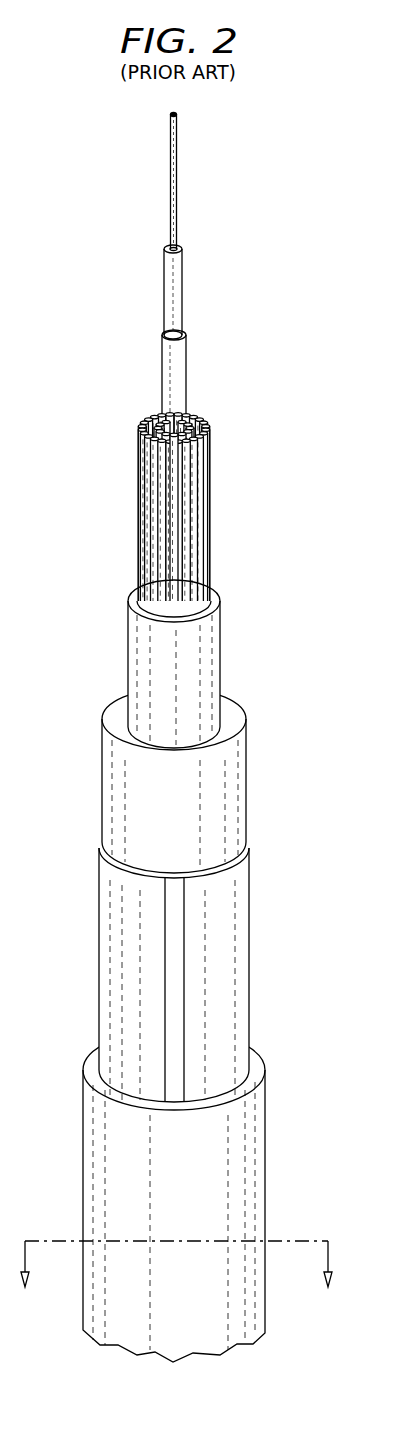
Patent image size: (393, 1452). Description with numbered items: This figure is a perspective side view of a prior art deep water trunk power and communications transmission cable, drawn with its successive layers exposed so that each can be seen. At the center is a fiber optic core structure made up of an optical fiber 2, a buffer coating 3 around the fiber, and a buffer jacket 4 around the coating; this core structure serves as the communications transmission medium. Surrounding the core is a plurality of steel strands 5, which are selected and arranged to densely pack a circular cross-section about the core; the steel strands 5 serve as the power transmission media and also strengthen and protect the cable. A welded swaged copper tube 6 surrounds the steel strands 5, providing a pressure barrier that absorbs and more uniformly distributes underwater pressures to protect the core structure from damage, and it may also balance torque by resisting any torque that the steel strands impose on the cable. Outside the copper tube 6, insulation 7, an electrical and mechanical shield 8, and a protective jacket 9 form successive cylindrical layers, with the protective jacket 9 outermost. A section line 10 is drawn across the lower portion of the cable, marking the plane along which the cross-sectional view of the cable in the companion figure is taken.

The optical fiber 2 is at (177, 183).
The buffer coating 3 is at (182, 291).
The buffer jacket 4 is at (186, 366).
The steel strands 5 is at (198, 411).
The welded swaged copper tube 6 is at (221, 662).
The insulation 7 is at (247, 782).
The electrical and mechanical shield 8 is at (250, 980).
The protective jacket 9 is at (265, 1163).
The section line 10— 10 is at (178, 1281).